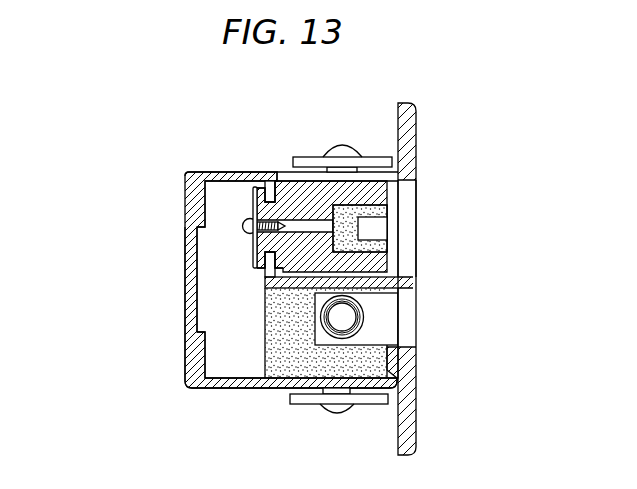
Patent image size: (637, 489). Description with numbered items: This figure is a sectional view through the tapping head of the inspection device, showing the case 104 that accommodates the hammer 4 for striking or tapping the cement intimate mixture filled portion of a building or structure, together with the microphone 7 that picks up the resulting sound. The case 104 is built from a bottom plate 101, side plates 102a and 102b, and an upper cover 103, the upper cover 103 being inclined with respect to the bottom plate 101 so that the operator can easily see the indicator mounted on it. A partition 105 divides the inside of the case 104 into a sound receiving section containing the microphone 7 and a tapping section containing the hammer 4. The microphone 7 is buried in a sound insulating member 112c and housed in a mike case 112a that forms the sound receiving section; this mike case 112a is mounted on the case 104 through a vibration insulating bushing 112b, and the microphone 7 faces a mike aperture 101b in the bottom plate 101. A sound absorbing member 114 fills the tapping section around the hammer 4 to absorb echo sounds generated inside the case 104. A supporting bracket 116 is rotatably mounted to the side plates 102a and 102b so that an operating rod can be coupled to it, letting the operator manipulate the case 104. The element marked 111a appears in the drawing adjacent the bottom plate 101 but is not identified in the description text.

The hammer 4 is at (352, 312).
The microphone 7 is at (378, 230).
The bottom plate 101 is at (439, 279).
The mike aperture 101b is at (405, 193).
The side plate 102a is at (220, 387).
The side plate 102b is at (203, 172).
The upper cover 103 is at (187, 277).
The case 104 is at (240, 268).
The partition 105 is at (276, 291).
The engaging lip of base plate 111a is at (405, 331).
The mike case 112a is at (350, 191).
The vibration insulating bushing 112b is at (258, 188).
The sound insulating member 112c is at (380, 210).
The sound absorbing member 114 is at (272, 353).
The supporting bracket 116 is at (297, 402).